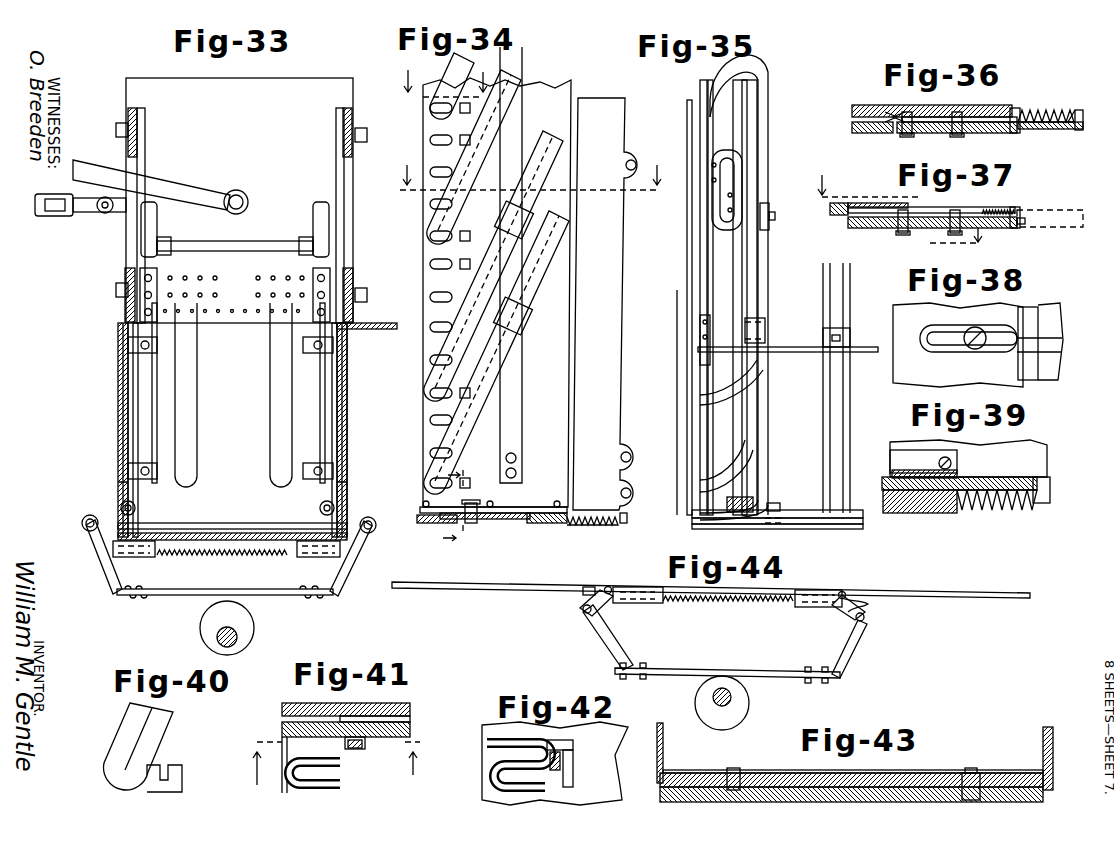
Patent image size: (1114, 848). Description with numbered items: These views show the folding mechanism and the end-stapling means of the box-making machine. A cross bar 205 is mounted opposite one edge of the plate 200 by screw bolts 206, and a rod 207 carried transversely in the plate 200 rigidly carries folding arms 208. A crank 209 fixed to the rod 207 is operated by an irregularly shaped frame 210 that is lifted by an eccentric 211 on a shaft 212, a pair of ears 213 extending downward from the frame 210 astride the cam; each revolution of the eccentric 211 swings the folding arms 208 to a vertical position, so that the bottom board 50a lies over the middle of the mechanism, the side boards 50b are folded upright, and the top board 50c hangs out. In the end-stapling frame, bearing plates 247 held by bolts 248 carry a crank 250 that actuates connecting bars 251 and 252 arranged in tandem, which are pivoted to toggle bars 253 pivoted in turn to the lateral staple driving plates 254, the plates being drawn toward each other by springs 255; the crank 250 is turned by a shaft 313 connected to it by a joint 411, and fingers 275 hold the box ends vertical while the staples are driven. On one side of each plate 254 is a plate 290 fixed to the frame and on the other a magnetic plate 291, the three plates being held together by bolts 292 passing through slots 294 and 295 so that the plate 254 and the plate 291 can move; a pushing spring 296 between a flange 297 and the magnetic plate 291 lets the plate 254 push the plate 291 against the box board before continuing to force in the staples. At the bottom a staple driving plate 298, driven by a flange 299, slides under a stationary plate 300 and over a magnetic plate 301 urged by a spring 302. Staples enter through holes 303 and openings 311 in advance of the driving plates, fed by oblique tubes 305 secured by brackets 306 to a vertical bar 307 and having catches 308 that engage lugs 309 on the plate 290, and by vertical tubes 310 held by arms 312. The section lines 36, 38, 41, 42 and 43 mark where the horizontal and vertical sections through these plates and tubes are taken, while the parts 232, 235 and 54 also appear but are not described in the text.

In FIG. 33, the frame plate 232 is at (239, 200).
In FIG. 33, the lever arm 235 is at (200, 178).
In FIG. 33, the bearing plates 247 is at (138, 122).
In FIG. 33, the bolts 248 is at (116, 128).
In FIG. 33, the crank shaft 250 is at (250, 243).
In FIG. 33, the connecting bar 251 is at (160, 278).
In FIG. 33, the connecting bar 252 is at (157, 376).
In FIG. 33, the toggle bars 253 is at (150, 478).
In FIG. 33, the lateral staple driving plate 254 is at (124, 395).
In FIG. 34, the lateral staple driving plate 254 is at (607, 115).
In FIG. 35, the lateral staple driving plate 254 is at (700, 290).
In FIG. 36, the lateral staple driving plate 254 is at (892, 130).
In FIG. 37, the lateral staple driving plate 254 is at (845, 216).
In FIG. 38, the lateral staple driving plate 254 is at (1026, 380).
In FIG. 39, the lateral staple driving plate 254 is at (964, 465).
In FIG. 41, the lateral staple driving plate 254 is at (375, 716).
In FIG. 33, the springs 255 is at (121, 509).
In FIG. 33, the fingers 275 is at (272, 380).
In FIG. 33, the plate 290 is at (135, 315).
In FIG. 34, the plate 290 is at (570, 73).
In FIG. 35, the plate 290 is at (737, 250).
In FIG. 36, the plate 290 is at (1000, 132).
In FIG. 37, the plate 290 is at (888, 226).
In FIG. 38, the plate 290 is at (1057, 380).
In FIG. 41, the plate 290 is at (282, 724).
In FIG. 42, the plate 290 is at (490, 797).
In FIG. 43, the plate 290 is at (1045, 745).
In FIG. 33, the magnetic plate 291 is at (128, 370).
In FIG. 35, the magnetic plate 291 is at (687, 268).
In FIG. 36, the magnetic plate 291 is at (880, 100).
In FIG. 37, the magnetic plate 291 is at (850, 203).
In FIG. 38, the magnetic plate 291 is at (905, 312).
In FIG. 41, the magnetic plate 291 is at (303, 693).
In FIG. 36, the bolts 292 is at (908, 135).
In FIG. 37, the bolts 292 is at (947, 237).
In FIG. 38, the bolts 292 is at (978, 349).
In FIG. 36, the slots 294 is at (1013, 122).
In FIG. 37, the slots 294 is at (910, 237).
In FIG. 38, the slots 294 is at (1022, 340).
In FIG. 36, the slots 295 is at (967, 118).
In FIG. 37, the slots 295 is at (932, 210).
In FIG. 38, the slots 295 is at (920, 340).
In FIG. 36, the pushing spring 296 is at (1027, 112).
In FIG. 37, the pushing spring 296 is at (987, 210).
In FIG. 36, the flange 297 is at (1073, 113).
In FIG. 37, the flange 297 is at (1020, 212).
In FIG. 33, the bottom staple driving plate 298 is at (240, 533).
In FIG. 34, the bottom staple driving plate 298 is at (580, 512).
In FIG. 35, the bottom staple driving plate 298 is at (735, 524).
In FIG. 39, the bottom staple driving plate 298 is at (930, 482).
In FIG. 43, the bottom staple driving plate 298 is at (888, 788).
In FIG. 34, the flange 299 is at (627, 516).
In FIG. 39, the flange 299 is at (1040, 480).
In FIG. 33, the stationary plate 300 is at (200, 518).
In FIG. 34, the stationary plate 300 is at (515, 503).
In FIG. 35, the stationary plate 300 is at (797, 510).
In FIG. 39, the stationary plate 300 is at (905, 460).
In FIG. 43, the stationary plate 300 is at (802, 773).
In FIG. 33, the magnetic plate 301 is at (272, 548).
In FIG. 34, the magnetic plate 301 is at (540, 523).
In FIG. 35, the magnetic plate 301 is at (840, 529).
In FIG. 39, the magnetic plate 301 is at (945, 513).
In FIG. 43, the magnetic plate 301 is at (858, 795).
In FIG. 34, the spring 302 is at (595, 525).
In FIG. 39, the spring 302 is at (1020, 508).
In FIG. 34, the holes 303 is at (430, 265).
In FIG. 34, the oblique staple holding tubes 305 is at (548, 162).
In FIG. 35, the oblique staple holding tubes 305 is at (768, 82).
In FIG. 40, the oblique staple holding tubes 305 is at (128, 730).
In FIG. 41, the oblique staple holding tubes 305 is at (293, 772).
In FIG. 42, the oblique staple holding tubes 305 is at (490, 756).
In FIG. 34, the brackets 306 is at (522, 220).
In FIG. 35, the brackets 306 is at (769, 225).
In FIG. 34, the vertical bar 307 is at (512, 384).
In FIG. 35, the vertical bar 307 is at (752, 277).
In FIG. 40, the catches 308 is at (167, 762).
In FIG. 41, the catches 308 is at (350, 760).
In FIG. 42, the catches 308 is at (573, 750).
In FIG. 34, the lugs 309 is at (505, 212).
In FIG. 41, the lugs 309 is at (364, 746).
In FIG. 42, the lugs 309 is at (565, 762).
In FIG. 35, the vertical tubes 310 is at (828, 443).
In FIG. 34, the openings 311 is at (417, 518).
In FIG. 35, the arms 312 is at (783, 347).
In FIG. 33, the shaft 313 is at (42, 216).
In FIG. 33, the joint 411 is at (82, 212).
In FIG. 44, the plate 200 is at (800, 607).
In FIG. 33, the cross bar 205 is at (115, 596).
In FIG. 44, the cross bar 205 is at (648, 604).
In FIG. 33, the screw bolts 206 is at (228, 557).
In FIG. 44, the screw bolts 206 is at (700, 602).
In FIG. 44, the rod 207 is at (608, 586).
In FIG. 33, the folding arms 208 is at (118, 418).
In FIG. 44, the folding arms 208 is at (497, 590).
In FIG. 33, the crank 209 is at (86, 528).
In FIG. 44, the crank 209 is at (580, 609).
In FIG. 33, the frame 210 is at (106, 565).
In FIG. 44, the frame 210 is at (600, 640).
In FIG. 33, the eccentric 211 is at (254, 625).
In FIG. 44, the eccentric 211 is at (750, 700).
In FIG. 33, the shaft 212 is at (217, 638).
In FIG. 44, the shaft 212 is at (713, 698).
In FIG. 33, the ears 213 is at (205, 596).
In FIG. 44, the ears 213 is at (718, 672).
In FIG. 33, the chamber 54 is at (227, 468).
In FIG. 33, the bottom board 50a is at (200, 553).
In FIG. 33, the side boards 50b is at (118, 482).
In FIG. 33, the top board 50c is at (375, 330).
In FIG. 34, the section line 36 is at (525, 189).
In FIG. 37, the section line 38 is at (903, 214).
In FIG. 34, the section line 41 is at (445, 95).
In FIG. 41, the section line 42 is at (342, 753).
In FIG. 34, the section line 43 is at (465, 509).